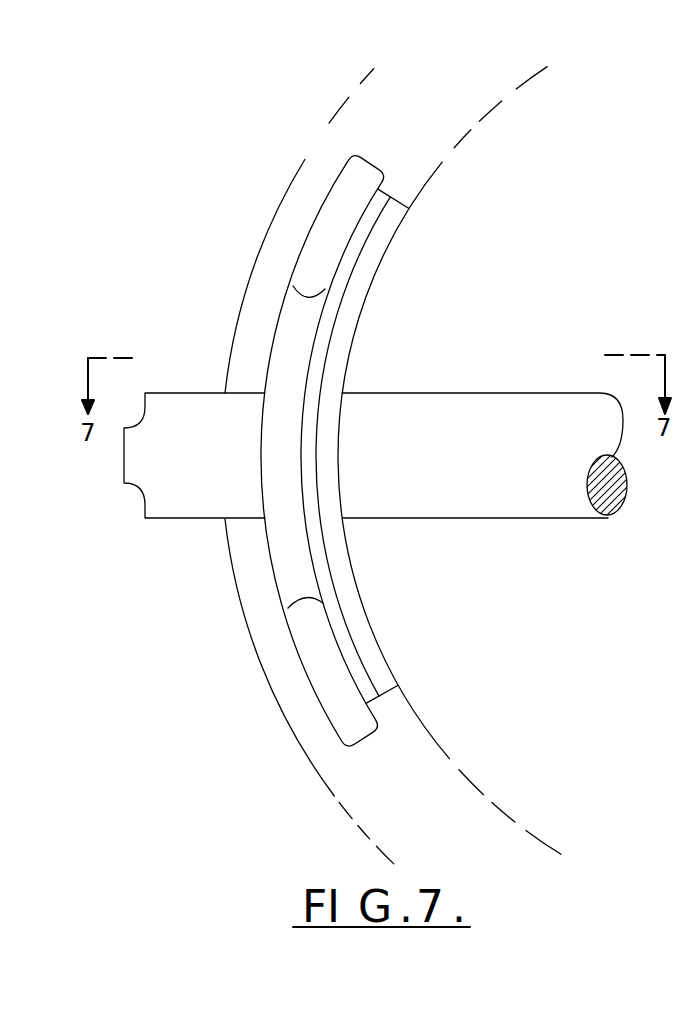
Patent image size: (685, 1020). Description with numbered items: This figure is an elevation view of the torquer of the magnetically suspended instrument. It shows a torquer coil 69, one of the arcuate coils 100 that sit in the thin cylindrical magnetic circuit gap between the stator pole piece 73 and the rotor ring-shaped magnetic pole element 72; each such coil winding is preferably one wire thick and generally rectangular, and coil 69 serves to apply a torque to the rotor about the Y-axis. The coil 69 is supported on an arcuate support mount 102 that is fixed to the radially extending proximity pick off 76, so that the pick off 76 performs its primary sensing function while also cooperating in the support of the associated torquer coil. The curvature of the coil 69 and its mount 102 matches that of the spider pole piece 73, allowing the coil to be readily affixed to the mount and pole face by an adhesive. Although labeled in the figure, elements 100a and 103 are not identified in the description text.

The torquer coil 69 is at (367, 465).
The ring-shaped magnetic pole element 72 is at (308, 173).
The stator pole piece 73 is at (442, 162).
The proximity pick off 76 is at (537, 392).
The arcuate coil 100 is at (318, 243).
The lower portion of flange 100a is at (313, 665).
The arcuate mount 102 is at (347, 357).
The spacer 103 is at (380, 259).